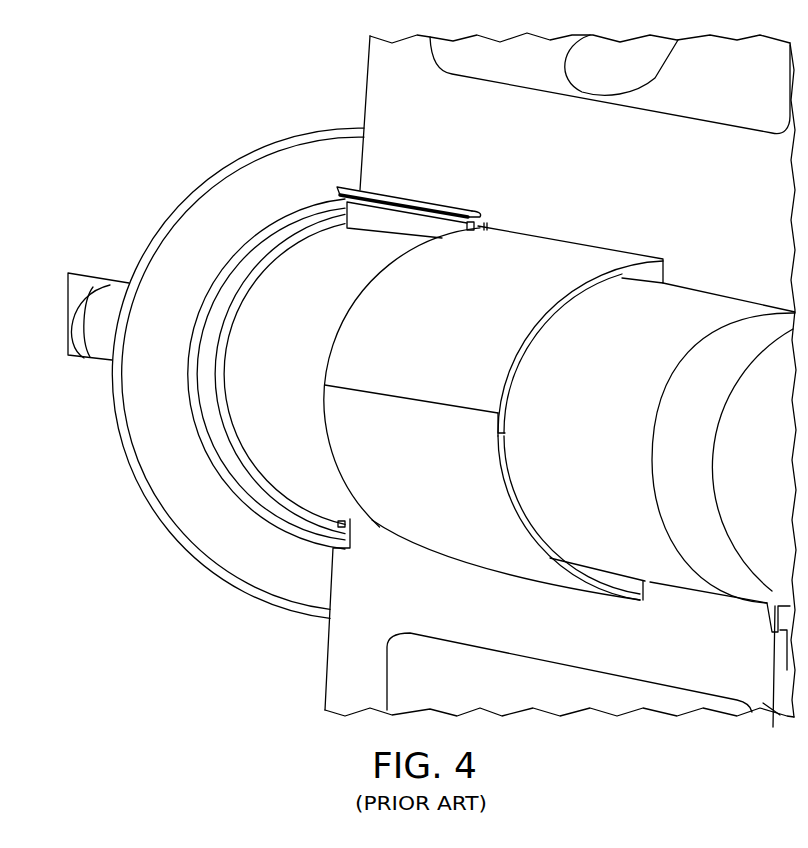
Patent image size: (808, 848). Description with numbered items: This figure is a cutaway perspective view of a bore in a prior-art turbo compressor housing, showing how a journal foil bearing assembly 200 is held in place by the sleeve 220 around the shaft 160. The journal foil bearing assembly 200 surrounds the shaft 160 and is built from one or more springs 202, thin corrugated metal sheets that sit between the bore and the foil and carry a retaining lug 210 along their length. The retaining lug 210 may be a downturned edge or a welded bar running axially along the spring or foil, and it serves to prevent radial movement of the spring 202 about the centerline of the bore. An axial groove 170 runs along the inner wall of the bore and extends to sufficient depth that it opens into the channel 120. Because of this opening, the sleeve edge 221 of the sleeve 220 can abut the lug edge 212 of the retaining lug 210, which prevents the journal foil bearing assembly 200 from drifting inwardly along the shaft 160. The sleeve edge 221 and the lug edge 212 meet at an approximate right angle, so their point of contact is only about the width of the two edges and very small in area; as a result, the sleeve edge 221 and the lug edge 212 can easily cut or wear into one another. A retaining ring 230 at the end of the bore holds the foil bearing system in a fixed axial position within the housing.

The channel 120 is at (641, 585).
The shaft 160 is at (690, 308).
The axial groove 170 is at (413, 203).
The journal foil bearing assembly 200 is at (268, 458).
The spring 202 is at (300, 403).
The retaining lug 210 is at (392, 223).
The lug edge 212 is at (486, 218).
The sleeve 220 is at (580, 256).
The sleeve edge 221 is at (345, 340).
The retaining ring 230 is at (247, 570).